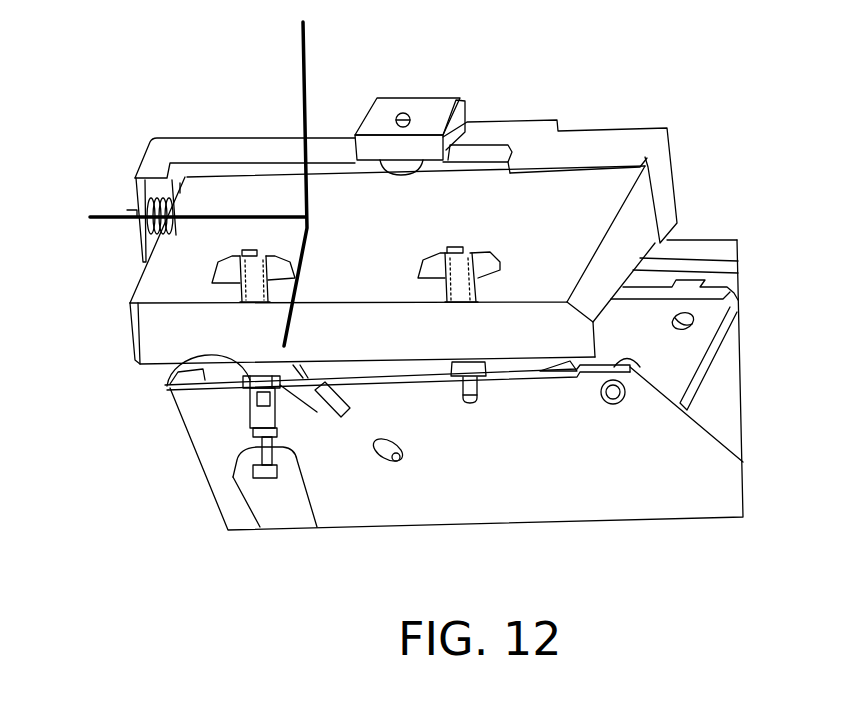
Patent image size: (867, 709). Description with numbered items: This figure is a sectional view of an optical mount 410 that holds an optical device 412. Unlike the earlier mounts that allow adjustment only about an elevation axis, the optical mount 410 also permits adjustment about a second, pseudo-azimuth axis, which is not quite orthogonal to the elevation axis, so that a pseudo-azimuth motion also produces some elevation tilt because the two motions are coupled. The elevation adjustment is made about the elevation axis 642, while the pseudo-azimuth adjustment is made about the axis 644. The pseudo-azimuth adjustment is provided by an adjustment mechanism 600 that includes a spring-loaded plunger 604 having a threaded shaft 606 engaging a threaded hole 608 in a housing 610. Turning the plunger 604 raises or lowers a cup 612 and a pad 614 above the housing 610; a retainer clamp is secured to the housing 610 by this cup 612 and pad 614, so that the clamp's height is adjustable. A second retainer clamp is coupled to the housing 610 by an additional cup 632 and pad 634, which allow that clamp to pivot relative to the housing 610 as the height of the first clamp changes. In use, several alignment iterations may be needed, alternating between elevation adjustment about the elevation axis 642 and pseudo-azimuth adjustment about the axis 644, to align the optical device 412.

The optical mount 410 is at (137, 117).
The optical device 412 is at (157, 284).
The elevation axis 642 is at (107, 214).
The axis 644 is at (306, 238).
The pad 634 is at (470, 362).
The cup 632 is at (485, 380).
The pad 614 is at (168, 373).
The cup 612 is at (255, 384).
The spring-loaded plunger 604 is at (253, 415).
The threaded shaft 606 is at (270, 440).
The threaded hole 608 is at (247, 457).
The pseudo-azimuth adjustment mechanism 600 is at (218, 452).
The housing 610 is at (485, 490).